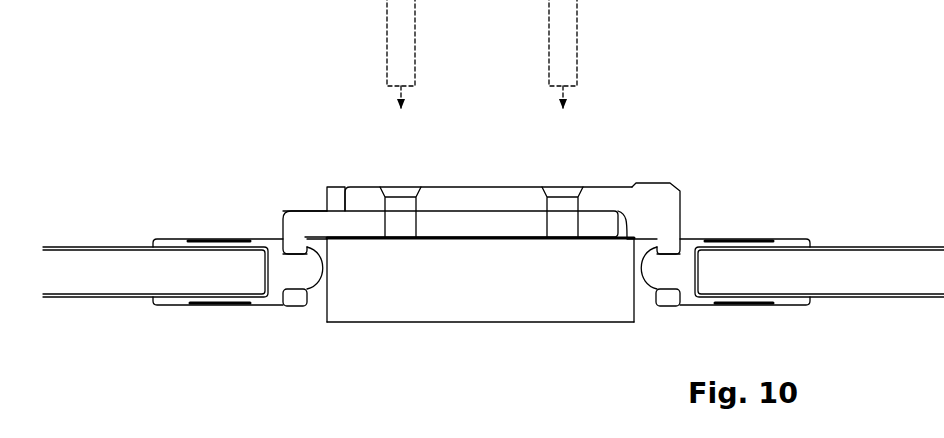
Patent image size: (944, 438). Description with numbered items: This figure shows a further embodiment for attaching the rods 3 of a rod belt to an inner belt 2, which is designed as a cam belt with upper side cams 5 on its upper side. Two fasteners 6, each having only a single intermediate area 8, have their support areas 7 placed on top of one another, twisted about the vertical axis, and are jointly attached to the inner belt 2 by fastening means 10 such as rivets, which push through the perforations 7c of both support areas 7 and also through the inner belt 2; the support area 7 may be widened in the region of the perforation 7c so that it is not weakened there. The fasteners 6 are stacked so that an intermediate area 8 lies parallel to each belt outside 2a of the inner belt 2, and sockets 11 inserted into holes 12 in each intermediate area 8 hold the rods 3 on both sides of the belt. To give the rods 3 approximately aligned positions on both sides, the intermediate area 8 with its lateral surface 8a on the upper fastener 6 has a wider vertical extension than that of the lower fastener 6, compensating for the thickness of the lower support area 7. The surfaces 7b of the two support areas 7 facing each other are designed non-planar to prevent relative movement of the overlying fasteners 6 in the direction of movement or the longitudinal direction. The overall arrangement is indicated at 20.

The inner belt 2 is at (387, 315).
The belt outside 2a is at (326, 311).
The rod 3 is at (82, 257).
The upper side cam 5 is at (338, 193).
The fastener 6 is at (322, 207).
The support area 7 is at (461, 201).
The surface of the support area 7b is at (517, 215).
The perforation 7c is at (558, 227).
The intermediate area 8 is at (298, 307).
The lateral surface 8a is at (282, 227).
The fastening means 10 is at (553, 57).
The socket 11 is at (182, 245).
The hole 12 is at (294, 251).
The fluid heater assembly 20 is at (728, 121).